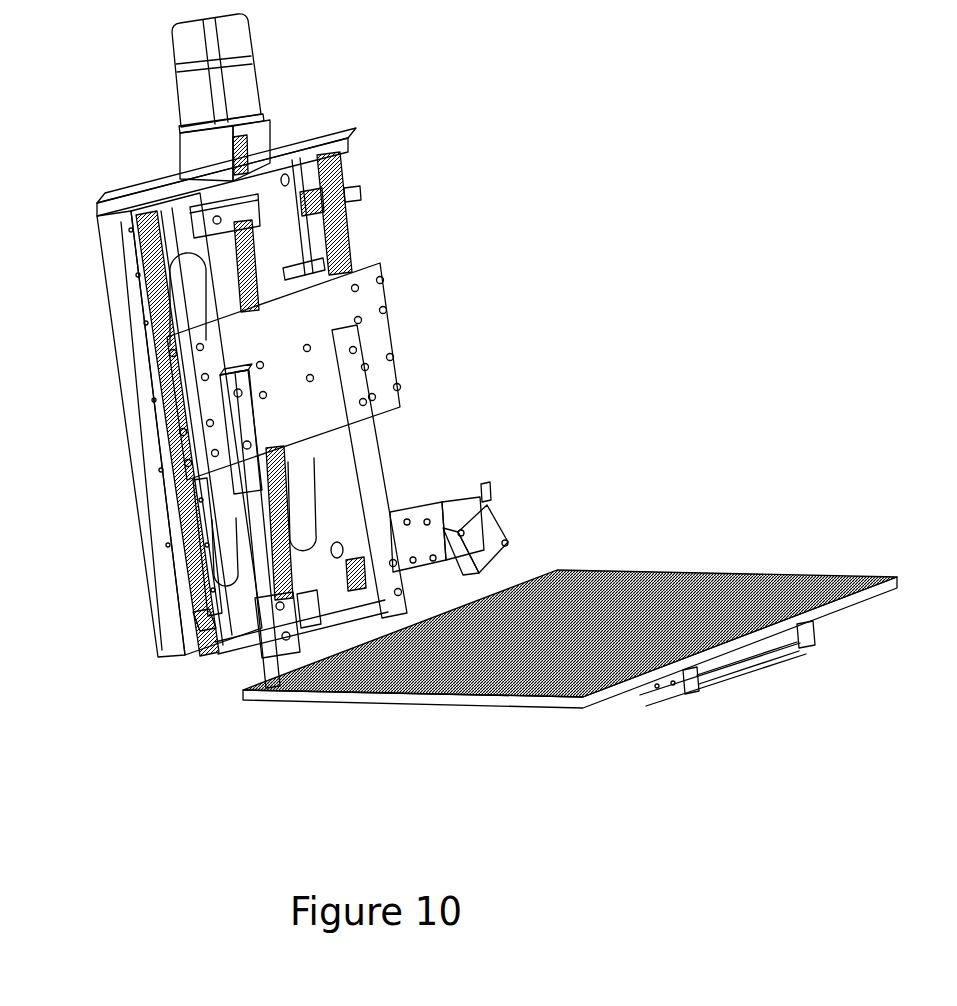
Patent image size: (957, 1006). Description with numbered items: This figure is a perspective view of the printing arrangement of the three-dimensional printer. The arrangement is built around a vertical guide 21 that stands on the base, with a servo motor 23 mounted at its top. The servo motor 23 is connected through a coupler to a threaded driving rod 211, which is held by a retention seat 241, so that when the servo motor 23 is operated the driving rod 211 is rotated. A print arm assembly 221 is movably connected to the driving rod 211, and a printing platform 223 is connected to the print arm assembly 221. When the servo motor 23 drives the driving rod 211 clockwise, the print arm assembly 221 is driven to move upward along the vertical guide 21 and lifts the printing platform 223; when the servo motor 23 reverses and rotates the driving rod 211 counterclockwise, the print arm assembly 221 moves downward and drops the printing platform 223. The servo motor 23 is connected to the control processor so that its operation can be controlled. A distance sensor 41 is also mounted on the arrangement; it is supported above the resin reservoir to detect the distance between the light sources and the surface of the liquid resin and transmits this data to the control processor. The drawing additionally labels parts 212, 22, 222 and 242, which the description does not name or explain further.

The vertical guide 21 is at (216, 405).
The threaded driving rod 211 is at (188, 168).
The side plate 212 is at (105, 428).
The sliding plate 22 is at (216, 366).
The print arm assembly 221 is at (156, 494).
The slider 222 is at (148, 485).
The printing platform 223 is at (465, 550).
The servo motor 23 is at (247, 95).
The retention seat 241 is at (285, 147).
The mounting bracket 242 is at (443, 482).
The distance sensor 41 is at (518, 466).